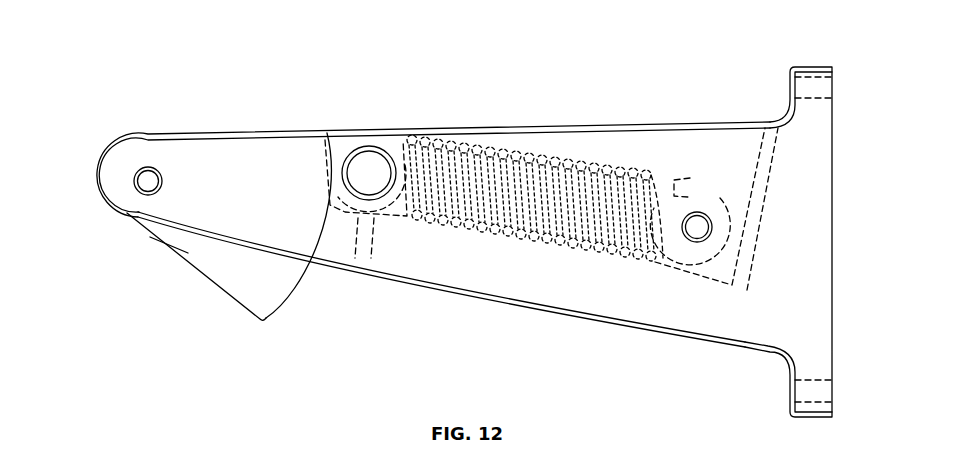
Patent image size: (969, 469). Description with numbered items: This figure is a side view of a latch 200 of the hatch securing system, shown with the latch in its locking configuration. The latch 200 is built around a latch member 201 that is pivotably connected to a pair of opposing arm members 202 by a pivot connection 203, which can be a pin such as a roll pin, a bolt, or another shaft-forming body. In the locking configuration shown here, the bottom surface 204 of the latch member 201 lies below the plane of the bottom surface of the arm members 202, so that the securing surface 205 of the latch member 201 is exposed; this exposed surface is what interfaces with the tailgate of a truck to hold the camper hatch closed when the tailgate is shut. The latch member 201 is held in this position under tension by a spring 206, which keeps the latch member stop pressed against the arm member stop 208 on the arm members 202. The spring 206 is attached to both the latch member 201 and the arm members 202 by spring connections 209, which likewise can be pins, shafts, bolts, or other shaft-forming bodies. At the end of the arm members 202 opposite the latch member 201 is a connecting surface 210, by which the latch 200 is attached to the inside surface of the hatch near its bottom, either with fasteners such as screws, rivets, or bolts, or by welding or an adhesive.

The latch 200 is at (203, 55).
The latch member 201 is at (150, 237).
The arm members 202 is at (618, 148).
The pivot connection 203 is at (144, 180).
The bottom surface 204 is at (200, 277).
The securing surface 205 is at (297, 303).
The spring 206 is at (500, 158).
The arm member stop 208 is at (428, 270).
The spring connections 209 is at (362, 160).
The connecting surface 210 is at (832, 155).